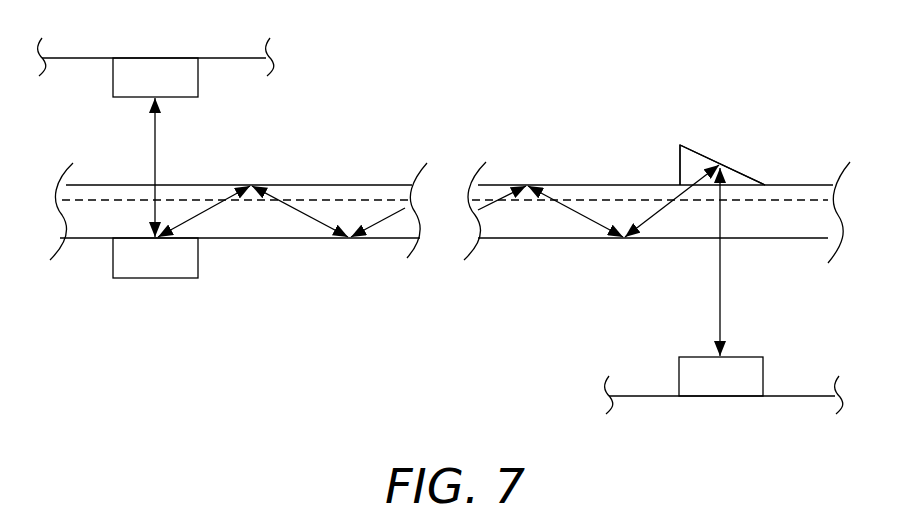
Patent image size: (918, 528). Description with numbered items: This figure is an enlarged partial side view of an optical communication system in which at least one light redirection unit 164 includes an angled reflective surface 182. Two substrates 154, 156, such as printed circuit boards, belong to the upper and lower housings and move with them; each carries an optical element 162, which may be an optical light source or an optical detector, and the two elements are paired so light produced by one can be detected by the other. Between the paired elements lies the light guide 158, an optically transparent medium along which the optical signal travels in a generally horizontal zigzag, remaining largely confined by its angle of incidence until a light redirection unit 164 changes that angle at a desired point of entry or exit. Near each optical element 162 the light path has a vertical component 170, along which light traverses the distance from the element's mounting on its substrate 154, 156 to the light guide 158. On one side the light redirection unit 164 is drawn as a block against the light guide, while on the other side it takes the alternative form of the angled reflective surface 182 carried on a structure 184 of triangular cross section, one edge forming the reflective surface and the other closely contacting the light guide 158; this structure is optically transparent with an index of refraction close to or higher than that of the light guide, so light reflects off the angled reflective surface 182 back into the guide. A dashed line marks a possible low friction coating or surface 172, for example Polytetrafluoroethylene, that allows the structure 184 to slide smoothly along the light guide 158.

The substrate 154 is at (236, 55).
The substrate 156 is at (807, 397).
The light guide 158 is at (383, 230).
The optical element 162 is at (154, 62).
The light redirection unit 164 is at (157, 270).
The vertical component 170 is at (723, 307).
The low friction coating or surface 172 is at (800, 200).
The angled reflective surface 182 is at (724, 166).
The structure having a triangular cross section 184 is at (680, 170).